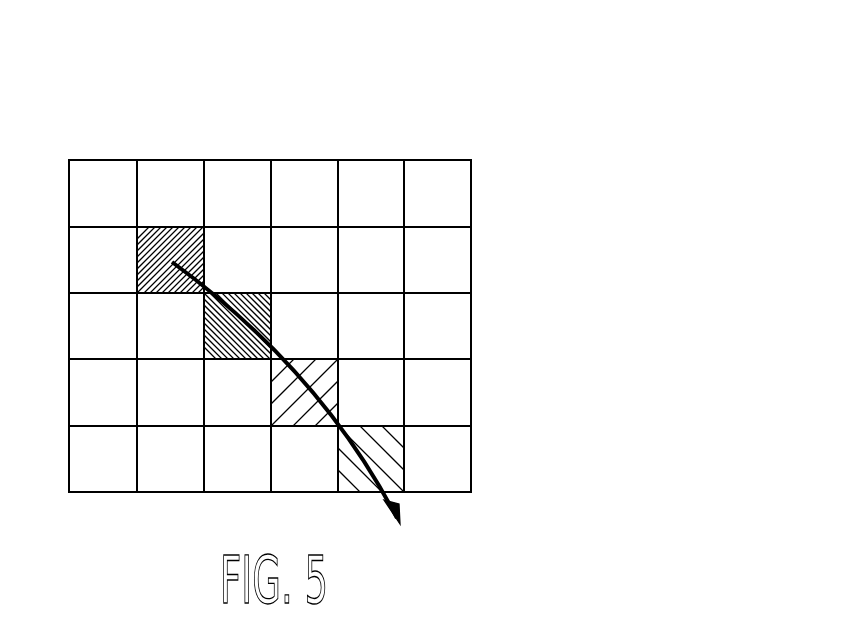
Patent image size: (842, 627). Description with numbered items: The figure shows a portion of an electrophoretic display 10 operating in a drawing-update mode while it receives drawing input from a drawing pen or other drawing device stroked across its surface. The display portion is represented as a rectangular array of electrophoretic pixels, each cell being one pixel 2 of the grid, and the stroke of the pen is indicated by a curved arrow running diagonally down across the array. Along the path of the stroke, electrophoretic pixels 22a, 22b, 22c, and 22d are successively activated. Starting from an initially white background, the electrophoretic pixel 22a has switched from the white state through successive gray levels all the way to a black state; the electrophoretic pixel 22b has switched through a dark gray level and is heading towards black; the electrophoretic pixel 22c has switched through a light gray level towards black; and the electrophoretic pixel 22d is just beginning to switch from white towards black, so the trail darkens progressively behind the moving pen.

The electrophoretic display 10 is at (472, 65).
The pixel cell 2 is at (100, 160).
The electrophoretic pixel 22a is at (167, 227).
The electrophoretic pixel 22b is at (245, 293).
The electrophoretic pixel 22c is at (312, 359).
The electrophoretic pixel 22d is at (380, 426).